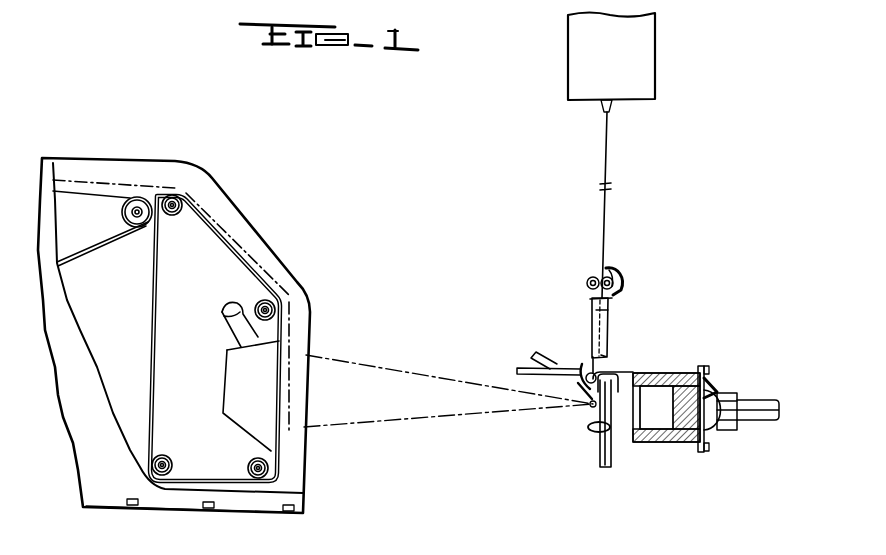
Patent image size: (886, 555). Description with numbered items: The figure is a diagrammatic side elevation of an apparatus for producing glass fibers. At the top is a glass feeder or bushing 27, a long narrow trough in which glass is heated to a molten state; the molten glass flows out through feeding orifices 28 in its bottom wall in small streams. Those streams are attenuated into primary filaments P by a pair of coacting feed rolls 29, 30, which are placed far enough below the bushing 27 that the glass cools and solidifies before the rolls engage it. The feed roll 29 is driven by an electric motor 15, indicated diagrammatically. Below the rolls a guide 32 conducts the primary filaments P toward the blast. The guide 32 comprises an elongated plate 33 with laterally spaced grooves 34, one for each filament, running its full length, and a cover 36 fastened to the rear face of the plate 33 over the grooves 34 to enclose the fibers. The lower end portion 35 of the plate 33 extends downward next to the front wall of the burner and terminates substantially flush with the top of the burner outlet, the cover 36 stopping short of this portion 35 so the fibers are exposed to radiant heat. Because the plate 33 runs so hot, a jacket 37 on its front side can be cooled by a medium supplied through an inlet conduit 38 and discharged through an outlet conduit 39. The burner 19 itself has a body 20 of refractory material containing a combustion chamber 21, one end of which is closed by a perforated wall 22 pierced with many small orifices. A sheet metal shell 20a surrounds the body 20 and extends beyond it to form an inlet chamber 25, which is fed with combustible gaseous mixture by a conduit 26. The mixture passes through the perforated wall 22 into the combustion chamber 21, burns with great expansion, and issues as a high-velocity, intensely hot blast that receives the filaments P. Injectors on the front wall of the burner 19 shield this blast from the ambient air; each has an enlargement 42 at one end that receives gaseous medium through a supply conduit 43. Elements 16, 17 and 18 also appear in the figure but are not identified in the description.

The electric motor 15 is at (619, 276).
The window track frame 16 is at (227, 243).
The handle 17 is at (240, 375).
The door panel 18 is at (244, 252).
The burner 19 is at (660, 382).
The body 20 is at (655, 377).
The sheet metal shell 20a is at (690, 452).
The combustion chamber 21 is at (657, 417).
The perforated wall 22 is at (709, 380).
The inlet chamber 25 is at (715, 392).
The conduit 26 is at (762, 419).
The glass feeder or bushing 27 is at (657, 86).
The feeding orifices 28 is at (603, 107).
The feed roll 29 is at (587, 284).
The feed roll 30 is at (623, 289).
The guide 32 is at (590, 333).
The plate 33 is at (595, 353).
The grooves 34 is at (598, 336).
The lower end portion 35 is at (588, 397).
The cover 36 is at (612, 316).
The jacket 37 is at (586, 370).
The inlet conduit 38 is at (522, 371).
The outlet conduit 39 is at (544, 364).
The enlargement 42 is at (590, 432).
The supply conduit 43 is at (613, 455).
The primary filaments P is at (604, 222).